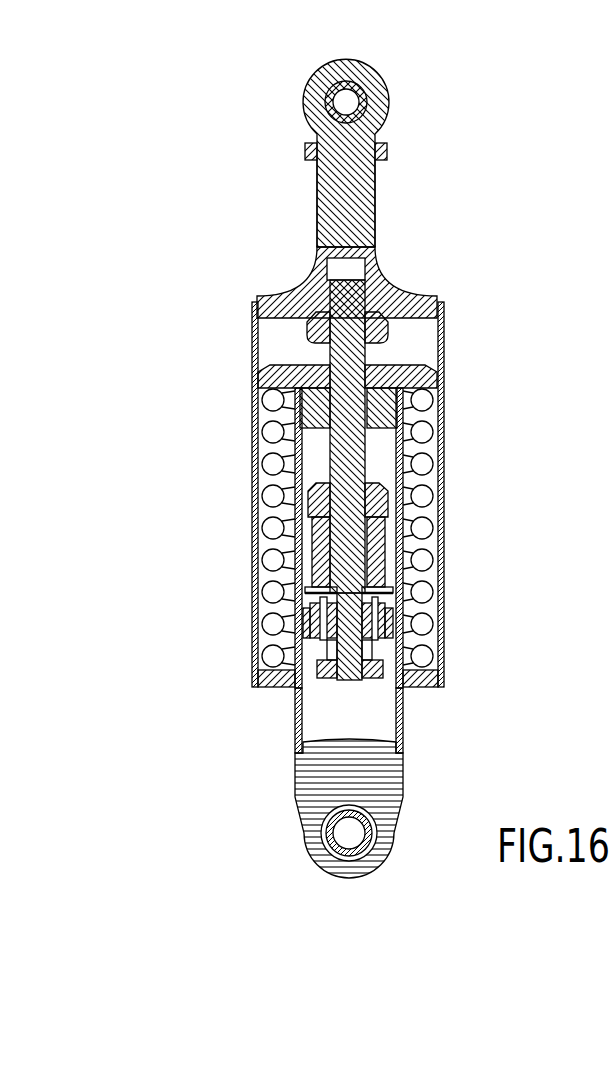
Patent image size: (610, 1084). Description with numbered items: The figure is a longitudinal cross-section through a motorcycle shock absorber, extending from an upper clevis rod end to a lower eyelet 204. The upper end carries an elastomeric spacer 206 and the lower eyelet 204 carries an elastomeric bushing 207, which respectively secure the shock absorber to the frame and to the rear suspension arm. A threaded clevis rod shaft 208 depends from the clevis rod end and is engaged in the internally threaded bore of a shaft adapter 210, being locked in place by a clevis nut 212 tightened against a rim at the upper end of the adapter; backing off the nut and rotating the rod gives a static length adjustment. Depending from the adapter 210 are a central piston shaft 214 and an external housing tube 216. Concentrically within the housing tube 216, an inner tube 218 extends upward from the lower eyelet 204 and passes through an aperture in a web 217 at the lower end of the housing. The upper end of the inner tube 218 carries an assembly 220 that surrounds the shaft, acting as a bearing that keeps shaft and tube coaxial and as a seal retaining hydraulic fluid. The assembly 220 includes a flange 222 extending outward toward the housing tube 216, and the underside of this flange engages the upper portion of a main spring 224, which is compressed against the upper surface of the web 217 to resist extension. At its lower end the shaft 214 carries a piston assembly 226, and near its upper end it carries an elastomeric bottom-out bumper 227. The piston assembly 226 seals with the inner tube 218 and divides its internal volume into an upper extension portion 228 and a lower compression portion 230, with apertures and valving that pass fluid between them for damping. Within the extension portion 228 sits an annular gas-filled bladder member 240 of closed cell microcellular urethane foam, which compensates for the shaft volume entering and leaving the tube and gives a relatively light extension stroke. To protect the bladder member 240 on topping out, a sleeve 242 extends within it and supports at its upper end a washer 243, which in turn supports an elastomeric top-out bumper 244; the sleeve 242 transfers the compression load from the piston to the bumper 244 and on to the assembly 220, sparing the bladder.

The lower eyelet 204 is at (353, 780).
The elastomeric spacer 206 is at (357, 97).
The elastomeric bushing 207 is at (372, 850).
The clevis rod shaft 208 is at (340, 192).
The shaft adapter 210 is at (387, 270).
The clevis nut 212 is at (387, 155).
The piston shaft 214 is at (352, 452).
The housing tube 216 is at (442, 562).
The web 217 is at (428, 688).
The inner tube 218 is at (399, 728).
The assembly 220 is at (290, 375).
The flange 222 is at (430, 369).
The main spring 224 is at (423, 535).
The piston assembly 226 is at (308, 654).
The bottom-out bumper 227 is at (388, 333).
The extension portion 228 is at (294, 446).
The compression portion 230 is at (335, 725).
The bladder member 240 is at (320, 572).
The sleeve 242 is at (311, 546).
The washer 243 is at (311, 515).
The top-out bumper 244 is at (385, 492).